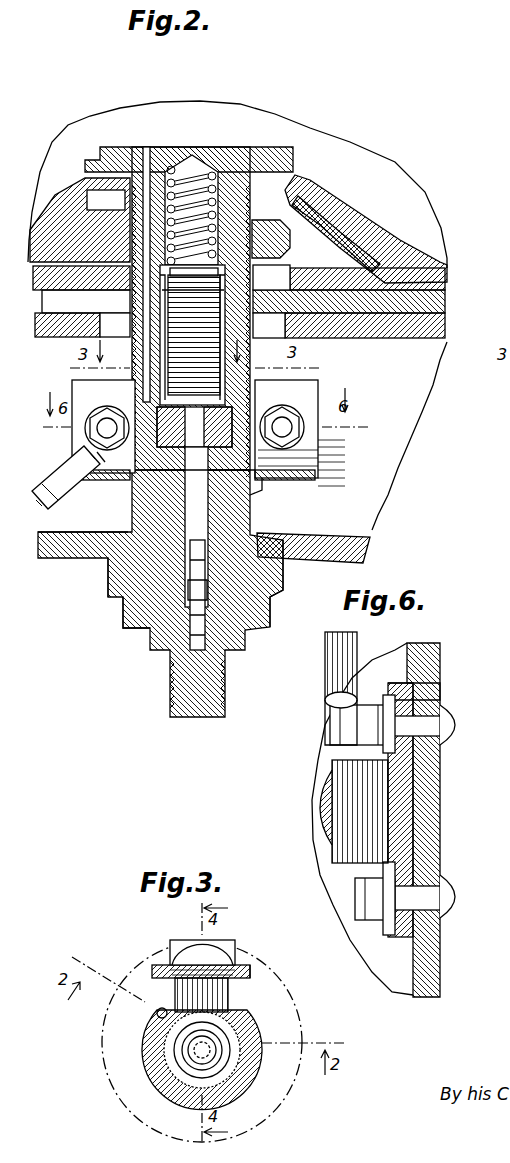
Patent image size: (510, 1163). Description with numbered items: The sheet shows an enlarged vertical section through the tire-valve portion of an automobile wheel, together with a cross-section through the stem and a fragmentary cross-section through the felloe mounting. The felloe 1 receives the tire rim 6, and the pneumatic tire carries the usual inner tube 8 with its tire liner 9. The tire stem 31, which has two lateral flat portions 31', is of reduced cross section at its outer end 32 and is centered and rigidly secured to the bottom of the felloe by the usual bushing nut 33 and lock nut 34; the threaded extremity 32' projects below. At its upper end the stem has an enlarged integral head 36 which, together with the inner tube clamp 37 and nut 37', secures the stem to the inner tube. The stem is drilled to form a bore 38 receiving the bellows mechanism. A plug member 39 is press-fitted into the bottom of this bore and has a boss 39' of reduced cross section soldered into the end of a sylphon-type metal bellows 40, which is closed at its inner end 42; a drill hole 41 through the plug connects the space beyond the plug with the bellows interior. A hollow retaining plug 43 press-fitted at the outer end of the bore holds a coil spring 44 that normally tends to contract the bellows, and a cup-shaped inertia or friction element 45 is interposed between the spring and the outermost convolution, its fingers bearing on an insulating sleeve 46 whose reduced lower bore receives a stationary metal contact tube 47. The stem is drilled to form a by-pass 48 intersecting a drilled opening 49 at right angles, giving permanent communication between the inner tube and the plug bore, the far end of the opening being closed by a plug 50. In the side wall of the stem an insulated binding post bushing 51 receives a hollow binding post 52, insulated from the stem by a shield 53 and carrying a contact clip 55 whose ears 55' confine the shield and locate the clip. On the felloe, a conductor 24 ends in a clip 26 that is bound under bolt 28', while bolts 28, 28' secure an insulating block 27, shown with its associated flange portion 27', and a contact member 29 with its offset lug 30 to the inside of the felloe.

In FIG. 2, the felloe 1 is at (325, 545).
In FIG. 6, the felloe 1 is at (430, 800).
In FIG. 2, the tire rim 6 is at (420, 338).
In FIG. 2, the inner tube 8 is at (378, 248).
In FIG. 2, the tire liner 9 is at (430, 316).
In FIG. 2, the conductor 24 is at (50, 505).
In FIG. 2, the clip 26 is at (100, 458).
In FIG. 6, the clip 26 is at (355, 672).
In FIG. 2, the insulating block 27 is at (208, 448).
In FIG. 6, the insulating block 27 is at (431, 810).
In FIG. 6, the bracket flange 27' is at (440, 807).
In FIG. 2, the bolt 28 is at (219, 402).
In FIG. 6, the bolt 28 is at (463, 811).
In FIG. 2, the bolt 28' is at (70, 390).
In FIG. 6, the bolt 28' is at (394, 811).
In FIG. 2, the contact member 29 is at (318, 468).
In FIG. 6, the contact member 29 is at (400, 700).
In FIG. 6, the offset lug 30 is at (342, 775).
In FIG. 2, the tire stem 31 is at (271, 277).
In FIG. 3, the tire stem 31 is at (217, 1057).
In FIG. 3, the flat portions 31' is at (171, 1105).
In FIG. 2, the reduced cross section portion 32 is at (92, 582).
In FIG. 2, the threaded stem 32' is at (171, 684).
In FIG. 2, the bushing nut 33 is at (108, 577).
In FIG. 2, the lock nut 34 is at (125, 618).
In FIG. 2, the integral head 36 is at (280, 150).
In FIG. 3, the integral head 36 is at (100, 1040).
In FIG. 2, the inner tube clamp 37 is at (336, 233).
In FIG. 2, the nut 37' is at (284, 240).
In FIG. 2, the bore 38 is at (223, 147).
In FIG. 2, the plug member 39 is at (265, 496).
In FIG. 2, the boss 39' is at (194, 427).
In FIG. 2, the metal bellows 40 is at (260, 372).
In FIG. 3, the metal bellows 40 is at (185, 1050).
In FIG. 2, the drill hole 41 is at (201, 452).
In FIG. 2, the inner end of bellows 42 is at (110, 252).
In FIG. 3, the inner end of bellows 42 is at (190, 1056).
In FIG. 2, the hollow retaining plug 43 is at (160, 147).
In FIG. 2, the coil spring 44 is at (180, 168).
In FIG. 2, the inertia or friction element 45 is at (160, 285).
In FIG. 2, the insulating sleeve 46 is at (165, 332).
In FIG. 3, the insulating sleeve 46 is at (245, 1045).
In FIG. 2, the stationary metal contact tube 47 is at (165, 352).
In FIG. 3, the stationary metal contact tube 47 is at (235, 1086).
In FIG. 2, the by-pass 48 is at (143, 147).
In FIG. 3, the by-pass 48 is at (158, 1016).
In FIG. 2, the drilled opening 49 is at (165, 468).
In FIG. 2, the plug 50 is at (258, 472).
In FIG. 3, the binding post bushing 51 is at (185, 990).
In FIG. 3, the hollow binding post 52 is at (215, 950).
In FIG. 3, the insulating shield 53 is at (262, 1000).
In FIG. 6, the contact clip 55 is at (292, 807).
In FIG. 3, the contact clip 55 is at (198, 946).
In FIG. 3, the ears 55' is at (210, 958).